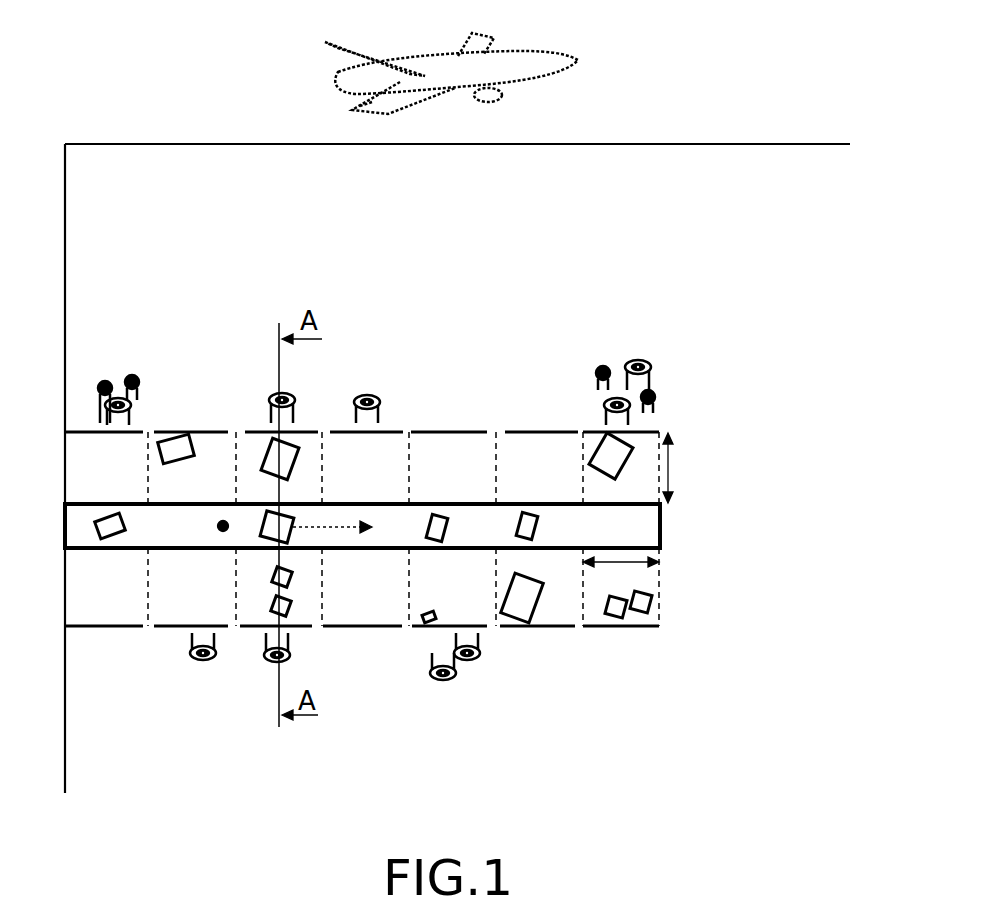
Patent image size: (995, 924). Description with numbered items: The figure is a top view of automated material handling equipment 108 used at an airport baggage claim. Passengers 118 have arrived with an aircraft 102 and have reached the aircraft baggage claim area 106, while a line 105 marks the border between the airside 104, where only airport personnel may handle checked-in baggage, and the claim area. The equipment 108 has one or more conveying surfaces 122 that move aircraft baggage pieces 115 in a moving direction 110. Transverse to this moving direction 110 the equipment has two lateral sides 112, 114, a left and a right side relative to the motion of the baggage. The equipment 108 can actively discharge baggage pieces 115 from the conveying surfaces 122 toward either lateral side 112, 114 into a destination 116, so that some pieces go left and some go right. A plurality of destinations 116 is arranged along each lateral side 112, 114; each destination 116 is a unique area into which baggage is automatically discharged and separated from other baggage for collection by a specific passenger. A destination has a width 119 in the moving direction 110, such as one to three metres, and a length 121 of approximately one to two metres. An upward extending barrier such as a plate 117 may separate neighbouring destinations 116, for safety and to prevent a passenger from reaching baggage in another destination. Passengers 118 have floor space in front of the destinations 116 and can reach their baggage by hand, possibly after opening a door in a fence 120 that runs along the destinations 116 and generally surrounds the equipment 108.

The aircraft 102 is at (577, 77).
The airside 104 is at (200, 69).
The line 105 is at (250, 146).
The aircraft baggage claim area 106 is at (172, 255).
The material handling equipment 108 is at (750, 513).
The moving direction 110 is at (353, 522).
The lateral side 112 is at (422, 503).
The lateral side 114 is at (382, 550).
The aircraft baggage pieces 115 is at (266, 512).
The destination 116 is at (87, 453).
The plate 117 is at (497, 430).
The passengers 118 is at (280, 393).
The width 119 is at (623, 562).
The fence 120 is at (657, 431).
The length 121 is at (668, 468).
The conveying surfaces 122 is at (222, 518).